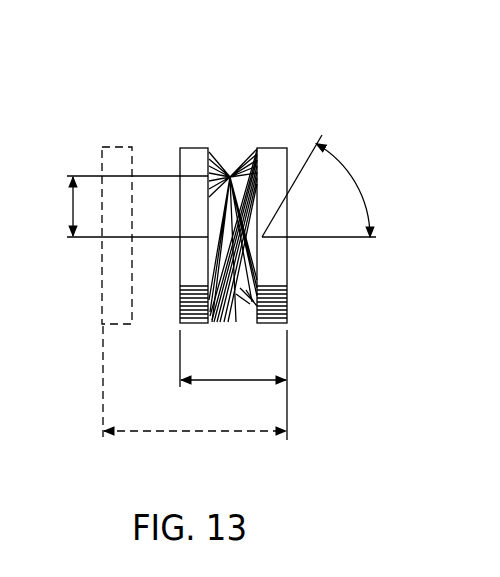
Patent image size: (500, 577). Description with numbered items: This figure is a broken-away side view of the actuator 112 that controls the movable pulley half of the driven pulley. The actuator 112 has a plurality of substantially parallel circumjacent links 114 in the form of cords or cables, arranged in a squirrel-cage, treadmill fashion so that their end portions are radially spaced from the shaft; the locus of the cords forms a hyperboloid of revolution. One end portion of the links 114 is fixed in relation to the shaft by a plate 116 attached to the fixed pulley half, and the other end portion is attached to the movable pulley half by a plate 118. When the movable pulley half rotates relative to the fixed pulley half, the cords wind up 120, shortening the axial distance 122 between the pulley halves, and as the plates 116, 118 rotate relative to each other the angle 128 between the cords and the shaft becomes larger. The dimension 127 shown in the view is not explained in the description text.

The actuator 112 is at (271, 89).
The circumjacent links 114 is at (248, 306).
The plate 116 is at (275, 263).
The plate 118 is at (194, 160).
The wind up 120 is at (229, 160).
The axial distance 122 is at (221, 381).
The offset dimension 127 is at (73, 208).
The angle between the cords and the shaft 128 is at (361, 178).